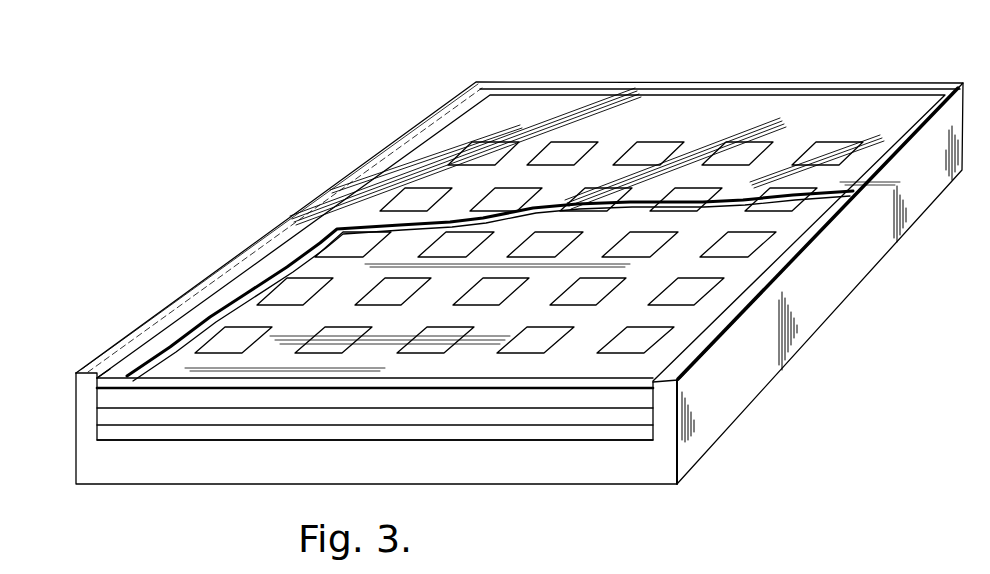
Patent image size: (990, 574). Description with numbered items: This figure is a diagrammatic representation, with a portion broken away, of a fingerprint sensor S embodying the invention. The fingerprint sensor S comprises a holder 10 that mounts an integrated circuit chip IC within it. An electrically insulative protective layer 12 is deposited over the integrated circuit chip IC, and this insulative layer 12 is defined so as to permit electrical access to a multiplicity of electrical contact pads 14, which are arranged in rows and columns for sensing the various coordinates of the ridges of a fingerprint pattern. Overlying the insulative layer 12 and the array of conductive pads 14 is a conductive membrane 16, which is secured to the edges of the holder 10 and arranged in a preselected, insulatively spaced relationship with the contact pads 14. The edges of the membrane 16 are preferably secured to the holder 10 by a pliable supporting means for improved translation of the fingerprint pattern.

The holder 10 is at (830, 302).
The electrically insulative protective layer 12 is at (135, 420).
The electrical contact pads 14 is at (338, 243).
The conductive membrane 16 is at (527, 115).
The fingerprint sensor S is at (410, 117).
The integrated circuit chip IC is at (553, 432).